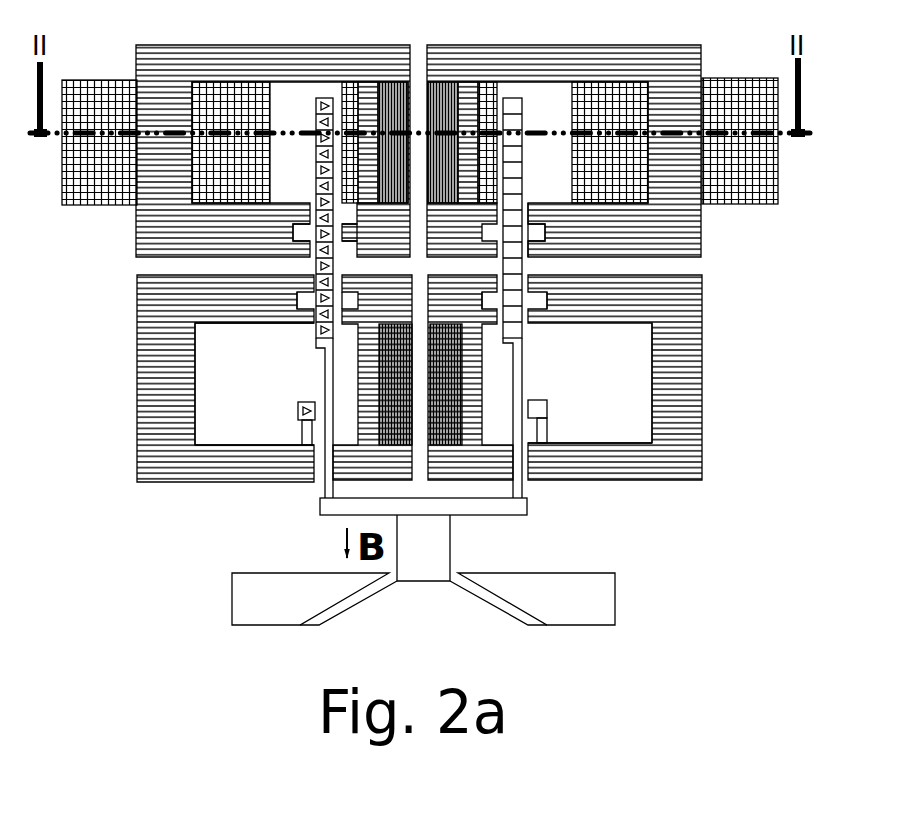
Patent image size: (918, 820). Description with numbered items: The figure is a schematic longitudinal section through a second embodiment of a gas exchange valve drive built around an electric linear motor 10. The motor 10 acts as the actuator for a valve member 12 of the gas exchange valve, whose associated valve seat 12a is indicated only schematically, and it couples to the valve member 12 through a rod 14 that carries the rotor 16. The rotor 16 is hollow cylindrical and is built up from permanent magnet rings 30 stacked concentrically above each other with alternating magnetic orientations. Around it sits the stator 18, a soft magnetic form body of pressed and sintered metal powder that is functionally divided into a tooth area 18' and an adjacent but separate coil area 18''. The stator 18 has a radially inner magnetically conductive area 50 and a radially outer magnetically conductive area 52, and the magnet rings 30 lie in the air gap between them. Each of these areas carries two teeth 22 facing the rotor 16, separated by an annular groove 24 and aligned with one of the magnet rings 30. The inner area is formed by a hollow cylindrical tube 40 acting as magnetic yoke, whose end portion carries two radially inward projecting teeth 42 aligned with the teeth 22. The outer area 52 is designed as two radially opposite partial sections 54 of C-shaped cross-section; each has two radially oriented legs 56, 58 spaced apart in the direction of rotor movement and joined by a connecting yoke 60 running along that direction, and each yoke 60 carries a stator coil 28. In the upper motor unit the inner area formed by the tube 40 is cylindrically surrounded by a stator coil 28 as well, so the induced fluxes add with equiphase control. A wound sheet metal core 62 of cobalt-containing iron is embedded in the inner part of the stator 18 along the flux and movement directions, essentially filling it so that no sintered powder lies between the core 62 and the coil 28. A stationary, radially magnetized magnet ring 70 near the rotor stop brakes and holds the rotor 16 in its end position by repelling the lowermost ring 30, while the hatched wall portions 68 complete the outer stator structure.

The electric linear motor 10 is at (302, 493).
The valve member 12 is at (460, 590).
The valve seat 12a is at (537, 602).
The rod 14 is at (453, 542).
The rotor 16 is at (348, 507).
The stator 18 is at (621, 411).
The tooth area 18' is at (527, 142).
The coil area 18'' is at (555, 211).
The teeth 22 is at (487, 247).
The annular groove 24 is at (490, 297).
The stator coil 28 is at (347, 97).
The permanent magnet rings 30 is at (522, 122).
The hollow cylindrical tube 40 is at (383, 233).
The teeth 42 is at (227, 237).
The radially inner magnetically conductive area 50 is at (443, 62).
The radially outer magnetically conductive area 52 is at (545, 60).
The partial sections 54 is at (228, 470).
The radially oriented leg 56 is at (277, 445).
The radially oriented leg 58 is at (245, 327).
The connecting yoke 60 is at (195, 403).
The wound sheet metal core 62 is at (400, 97).
The base wall 68 is at (585, 462).
The magnet ring 70 is at (297, 412).